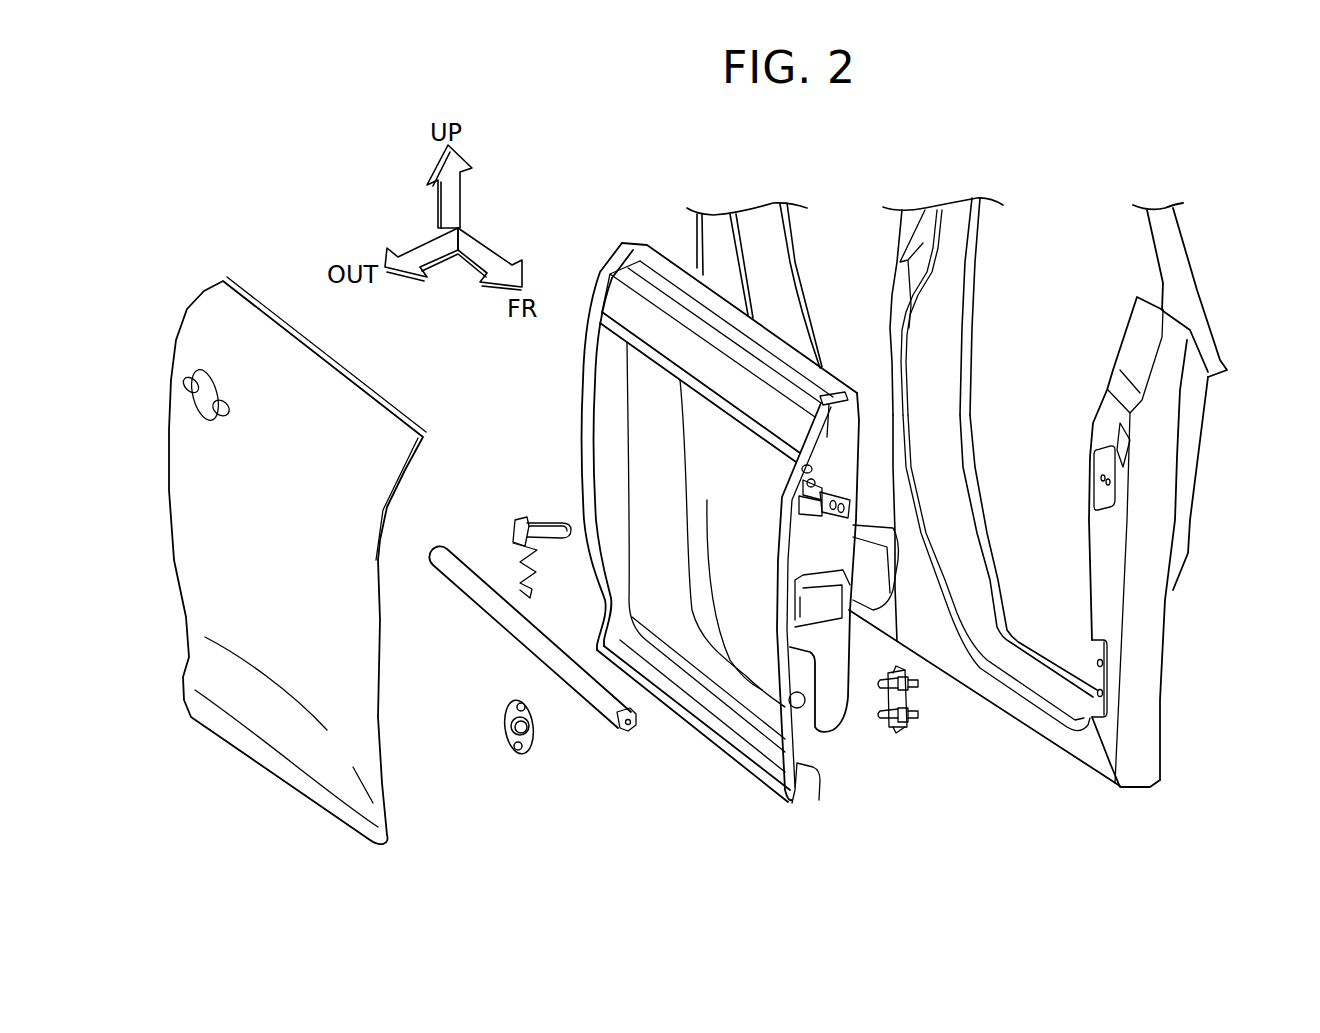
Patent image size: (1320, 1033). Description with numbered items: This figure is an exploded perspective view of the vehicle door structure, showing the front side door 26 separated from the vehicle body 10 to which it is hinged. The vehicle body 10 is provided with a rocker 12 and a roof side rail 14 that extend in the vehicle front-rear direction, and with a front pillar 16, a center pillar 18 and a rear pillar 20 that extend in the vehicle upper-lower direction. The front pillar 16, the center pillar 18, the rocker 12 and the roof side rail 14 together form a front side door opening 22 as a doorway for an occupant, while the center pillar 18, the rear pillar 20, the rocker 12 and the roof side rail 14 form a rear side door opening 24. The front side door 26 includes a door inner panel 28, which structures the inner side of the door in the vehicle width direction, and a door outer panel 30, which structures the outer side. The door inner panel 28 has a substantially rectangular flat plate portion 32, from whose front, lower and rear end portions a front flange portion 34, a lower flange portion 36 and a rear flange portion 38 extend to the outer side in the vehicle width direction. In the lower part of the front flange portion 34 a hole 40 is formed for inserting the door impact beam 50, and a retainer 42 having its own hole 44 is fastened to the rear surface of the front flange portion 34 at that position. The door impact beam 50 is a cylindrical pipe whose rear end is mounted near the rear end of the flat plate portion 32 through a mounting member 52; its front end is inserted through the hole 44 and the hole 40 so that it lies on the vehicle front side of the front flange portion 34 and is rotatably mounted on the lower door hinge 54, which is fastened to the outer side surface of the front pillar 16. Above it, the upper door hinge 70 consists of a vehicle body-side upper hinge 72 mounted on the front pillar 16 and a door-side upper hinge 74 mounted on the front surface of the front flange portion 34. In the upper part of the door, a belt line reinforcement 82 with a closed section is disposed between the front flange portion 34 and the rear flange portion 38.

The vehicle body 10 is at (1222, 329).
The rocker 12 is at (1020, 720).
The roof side rail 14 is at (1168, 248).
The front pillar 16 is at (1157, 487).
The center pillar 18 is at (947, 355).
The rear pillar 20 is at (780, 275).
The front side door opening 22 is at (977, 480).
The rear side door opening 24 is at (875, 343).
The front side door 26 is at (507, 362).
The door inner panel 28 is at (571, 406).
The door outer panel 30 is at (397, 401).
The flat plate portion 32 is at (707, 500).
The front flange portion 34 is at (818, 803).
The lower flange portion 36 is at (697, 745).
The rear flange portion 38 is at (582, 448).
The hole 40 is at (797, 708).
The retainer 42 is at (498, 700).
The hole 44 is at (508, 727).
The door impact beam 50 is at (453, 598).
The mounting member 52 is at (515, 526).
The lower door hinge 54 is at (923, 697).
The upper door hinge 70 is at (847, 477).
The vehicle body-side upper hinge 72 is at (853, 508).
The door-side upper hinge 74 is at (797, 505).
The belt line reinforcement 82 is at (655, 293).